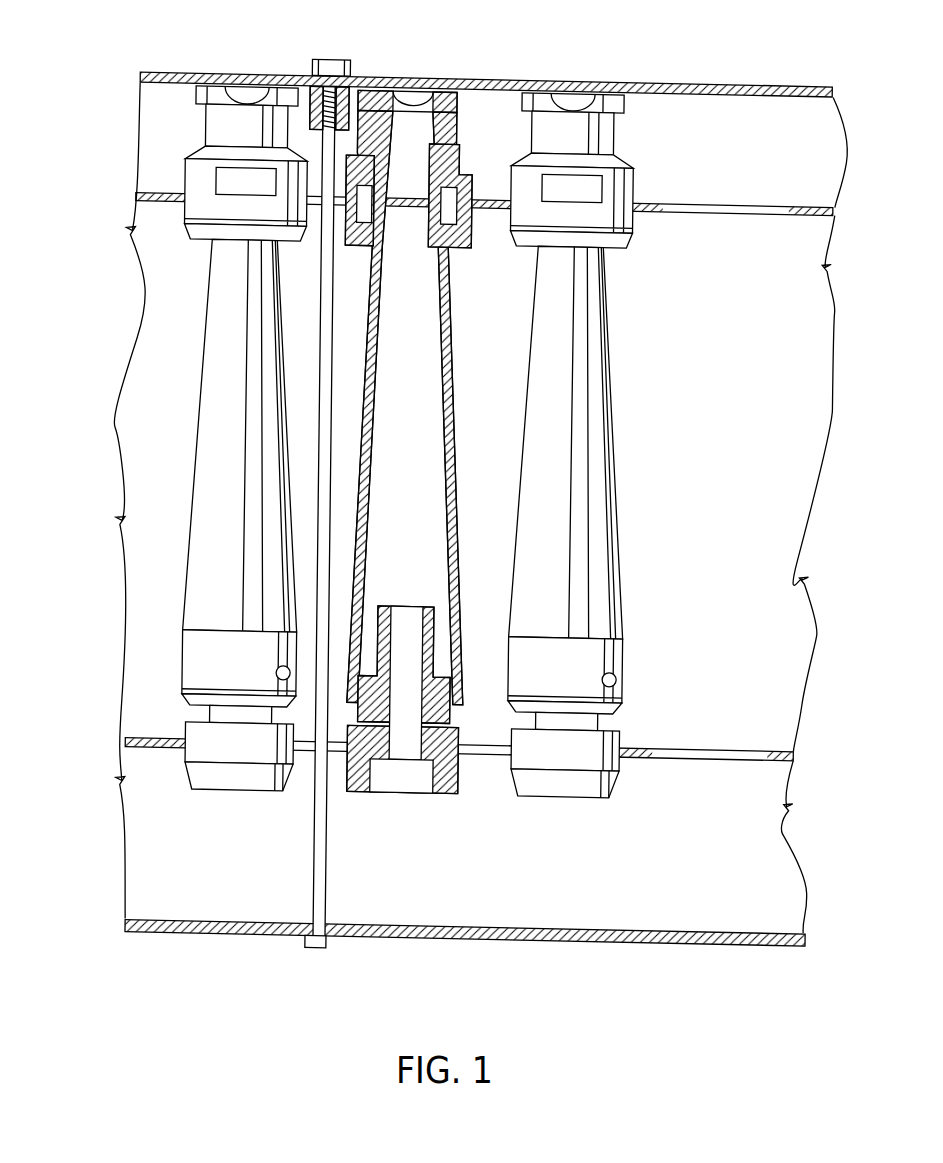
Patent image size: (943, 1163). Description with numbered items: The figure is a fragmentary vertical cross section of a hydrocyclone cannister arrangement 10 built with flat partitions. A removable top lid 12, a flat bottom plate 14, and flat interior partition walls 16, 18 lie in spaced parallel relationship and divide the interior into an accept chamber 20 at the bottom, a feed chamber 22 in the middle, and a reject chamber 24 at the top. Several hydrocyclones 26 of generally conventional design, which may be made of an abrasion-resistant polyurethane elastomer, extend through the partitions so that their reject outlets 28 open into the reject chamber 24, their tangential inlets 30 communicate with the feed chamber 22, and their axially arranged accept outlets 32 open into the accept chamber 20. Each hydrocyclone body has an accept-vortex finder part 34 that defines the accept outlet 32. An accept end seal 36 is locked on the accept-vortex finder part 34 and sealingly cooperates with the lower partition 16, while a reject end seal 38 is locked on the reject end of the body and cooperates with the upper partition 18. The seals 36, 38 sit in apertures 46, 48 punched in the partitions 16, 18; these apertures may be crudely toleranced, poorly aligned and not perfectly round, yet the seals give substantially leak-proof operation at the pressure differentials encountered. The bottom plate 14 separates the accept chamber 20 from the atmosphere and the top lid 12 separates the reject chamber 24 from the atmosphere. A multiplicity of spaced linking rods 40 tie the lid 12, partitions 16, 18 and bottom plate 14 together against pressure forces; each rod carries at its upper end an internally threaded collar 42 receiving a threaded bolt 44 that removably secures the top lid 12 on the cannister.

The hydrocyclone cannister arrangement 10 is at (478, 505).
The removable top lid 12 is at (672, 76).
The flat bottom plate 14 is at (614, 935).
The lower flat partition wall 16 is at (656, 740).
The upper flat partition wall 18 is at (659, 195).
The accept chamber 20 is at (774, 867).
The feed chamber 22 is at (786, 366).
The reject chamber 24 is at (788, 144).
The hydrocyclone 26 is at (517, 466).
The reject outlet 28 is at (411, 104).
The tangential inlet 30 is at (624, 671).
The accept outlet 32 is at (412, 758).
The accept-vortex finder part 34 is at (458, 708).
The accept end seal 36 is at (629, 775).
The reject end seal 38 is at (456, 166).
The linking rod 40 is at (325, 301).
The internally threaded collar 42 is at (306, 72).
The threaded bolt 44 is at (346, 80).
The aperture 46 is at (778, 741).
The aperture 48 is at (779, 204).